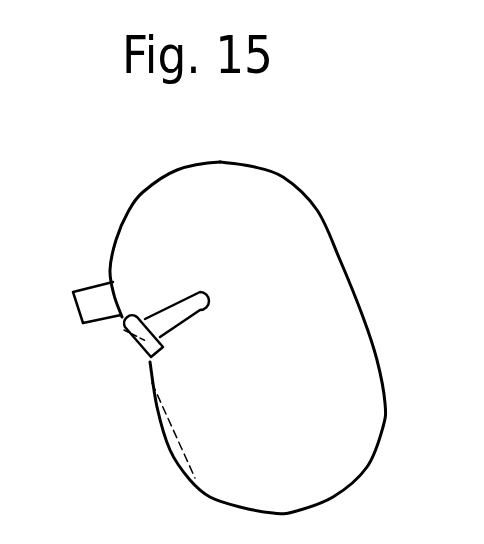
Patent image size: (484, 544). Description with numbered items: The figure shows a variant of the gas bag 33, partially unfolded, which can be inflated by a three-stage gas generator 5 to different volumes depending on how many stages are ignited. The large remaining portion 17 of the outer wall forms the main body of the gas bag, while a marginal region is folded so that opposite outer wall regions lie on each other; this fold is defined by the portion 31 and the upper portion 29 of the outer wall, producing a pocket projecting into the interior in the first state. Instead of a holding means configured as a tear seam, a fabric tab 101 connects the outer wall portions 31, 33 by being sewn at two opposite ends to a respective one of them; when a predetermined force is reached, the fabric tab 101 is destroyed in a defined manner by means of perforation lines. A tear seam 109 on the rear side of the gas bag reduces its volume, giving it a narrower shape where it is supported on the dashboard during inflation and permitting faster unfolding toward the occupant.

The remaining portion of the gas bag 17 is at (143, 192).
The gas bag 33 is at (385, 427).
The three-stage gas generator 5 is at (88, 307).
The fabric tab 101 is at (124, 335).
The upper portion of the outer wall 29 is at (197, 289).
The portion of the outer wall 31 is at (190, 314).
The tear seam 109 is at (180, 429).